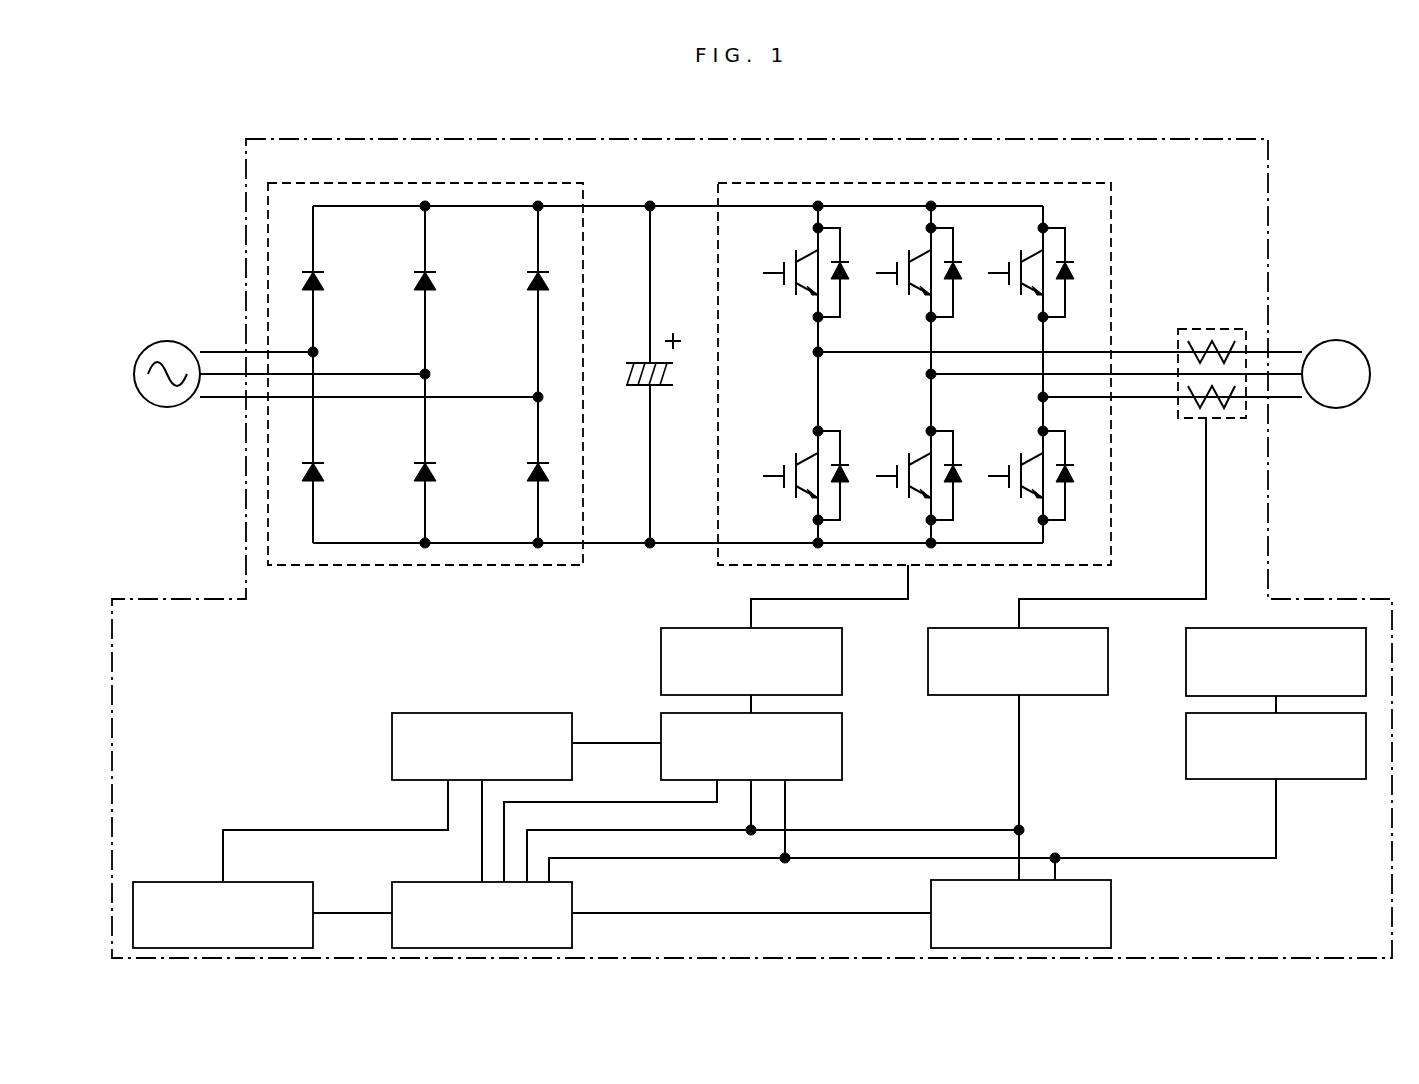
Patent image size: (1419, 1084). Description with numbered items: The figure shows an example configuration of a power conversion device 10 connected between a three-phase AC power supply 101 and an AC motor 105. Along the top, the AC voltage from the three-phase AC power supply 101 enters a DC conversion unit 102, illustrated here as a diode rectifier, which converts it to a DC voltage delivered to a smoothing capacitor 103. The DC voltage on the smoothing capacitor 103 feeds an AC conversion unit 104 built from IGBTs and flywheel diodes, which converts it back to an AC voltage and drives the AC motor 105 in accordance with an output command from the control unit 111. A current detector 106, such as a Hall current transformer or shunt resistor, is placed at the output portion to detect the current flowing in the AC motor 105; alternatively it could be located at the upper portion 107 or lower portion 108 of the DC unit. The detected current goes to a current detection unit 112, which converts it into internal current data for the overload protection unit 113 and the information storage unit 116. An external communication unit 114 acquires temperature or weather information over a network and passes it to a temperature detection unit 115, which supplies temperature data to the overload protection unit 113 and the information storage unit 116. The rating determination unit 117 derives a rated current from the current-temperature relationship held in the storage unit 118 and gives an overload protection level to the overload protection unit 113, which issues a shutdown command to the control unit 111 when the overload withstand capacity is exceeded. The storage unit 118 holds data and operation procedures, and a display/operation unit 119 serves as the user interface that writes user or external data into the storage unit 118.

The power conversion device 10 is at (243, 180).
The three-phase AC power supply 101 is at (165, 341).
The DC conversion unit 102 is at (372, 183).
The smoothing capacitor 103 is at (640, 362).
The AC conversion unit 104 is at (878, 183).
The AC motor 105 is at (1327, 341).
The current detector 106 is at (1205, 329).
The upper portion of DC unit 107 is at (690, 206).
The lower portion of DC unit 108 is at (690, 545).
The control unit 111 is at (661, 637).
The current detection unit 112 is at (928, 637).
The overload protection unit 113 is at (661, 721).
The external communication unit 114 is at (1186, 637).
The temperature detection unit 115 is at (1186, 722).
The information storage unit 116 is at (931, 888).
The rating determination unit 117 is at (458, 713).
The storage unit 118 is at (458, 882).
The display/operation unit 119 is at (200, 882).